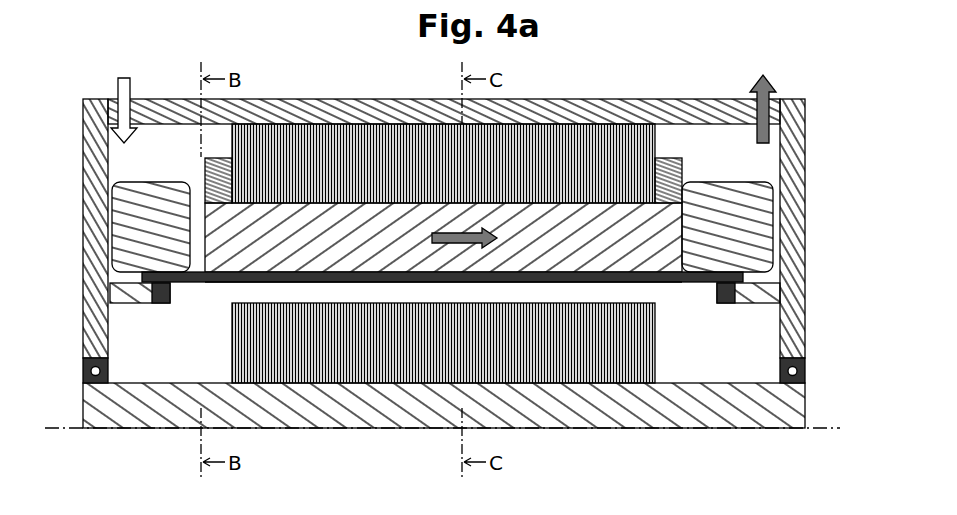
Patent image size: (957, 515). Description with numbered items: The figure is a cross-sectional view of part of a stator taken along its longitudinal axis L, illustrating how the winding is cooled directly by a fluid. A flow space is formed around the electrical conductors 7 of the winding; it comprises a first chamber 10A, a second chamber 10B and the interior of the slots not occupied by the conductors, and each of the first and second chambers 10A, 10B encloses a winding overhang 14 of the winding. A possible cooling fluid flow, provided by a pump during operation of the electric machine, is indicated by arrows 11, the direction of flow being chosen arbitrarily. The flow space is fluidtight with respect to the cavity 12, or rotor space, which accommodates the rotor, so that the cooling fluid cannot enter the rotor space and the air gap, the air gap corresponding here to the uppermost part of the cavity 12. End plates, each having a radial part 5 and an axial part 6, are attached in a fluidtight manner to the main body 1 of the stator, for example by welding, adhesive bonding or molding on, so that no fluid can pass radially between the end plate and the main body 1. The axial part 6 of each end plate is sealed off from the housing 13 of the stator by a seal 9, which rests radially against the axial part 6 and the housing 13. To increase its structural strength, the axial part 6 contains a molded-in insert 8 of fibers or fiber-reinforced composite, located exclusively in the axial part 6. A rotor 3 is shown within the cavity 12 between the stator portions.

The main body 1 is at (346, 169).
The rotor 3 is at (333, 250).
The radial part 5 is at (203, 185).
The axial part 6 is at (199, 283).
The electrical conductors 7 is at (442, 227).
The winding overhang 14 is at (180, 239).
The insert 8 is at (182, 283).
The seal 9 is at (157, 283).
The first chamber 10A is at (171, 140).
The second chamber 10B is at (694, 140).
The arrows 11 is at (118, 90).
The cavity 12 is at (438, 293).
The housing 13 is at (805, 172).
The longitudinal axis L is at (833, 430).